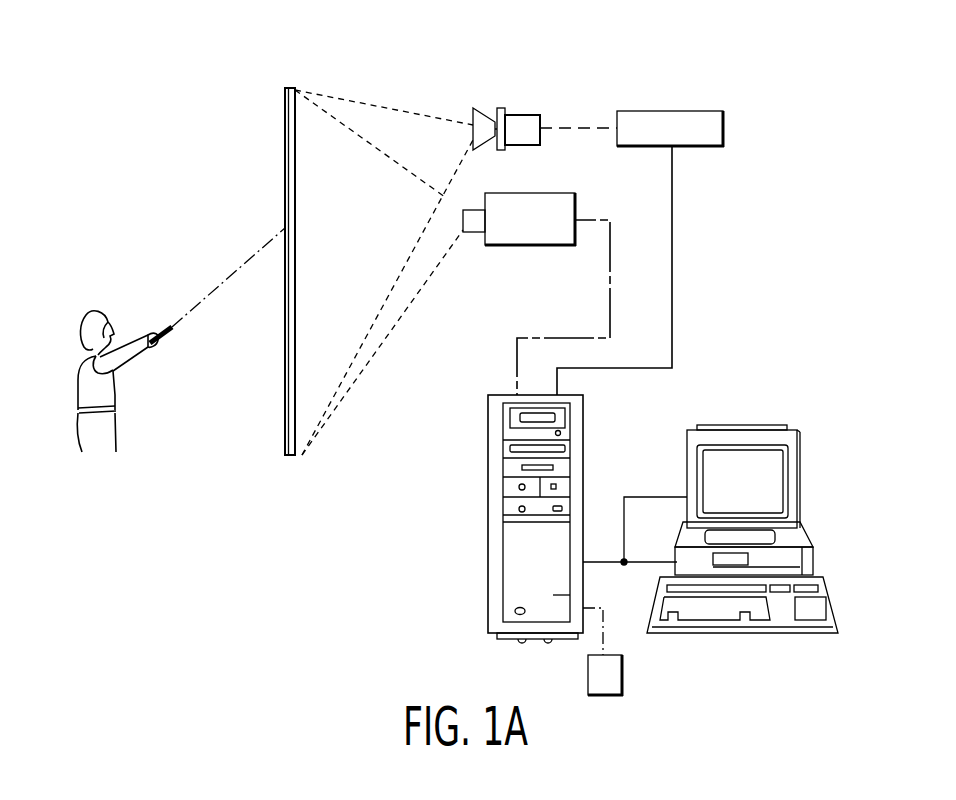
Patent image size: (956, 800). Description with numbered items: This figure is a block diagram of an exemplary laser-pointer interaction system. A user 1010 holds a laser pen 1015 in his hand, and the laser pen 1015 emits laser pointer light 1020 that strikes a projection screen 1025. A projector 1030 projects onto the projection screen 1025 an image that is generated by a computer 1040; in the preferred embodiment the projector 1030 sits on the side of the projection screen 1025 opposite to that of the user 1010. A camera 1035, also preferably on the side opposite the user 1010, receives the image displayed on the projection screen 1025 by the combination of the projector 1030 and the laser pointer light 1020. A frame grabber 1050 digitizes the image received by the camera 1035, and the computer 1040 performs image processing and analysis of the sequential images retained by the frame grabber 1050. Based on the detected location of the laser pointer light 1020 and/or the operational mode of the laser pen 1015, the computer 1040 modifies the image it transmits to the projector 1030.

The user 1010 is at (100, 456).
The laser pen 1015 is at (166, 337).
The laser pointer light 1020 is at (241, 263).
The projection screen 1025 is at (288, 88).
The projector 1030 is at (512, 254).
The camera 1035 is at (526, 110).
The computer 1040 is at (488, 546).
The frame grabber 1050 is at (698, 108).